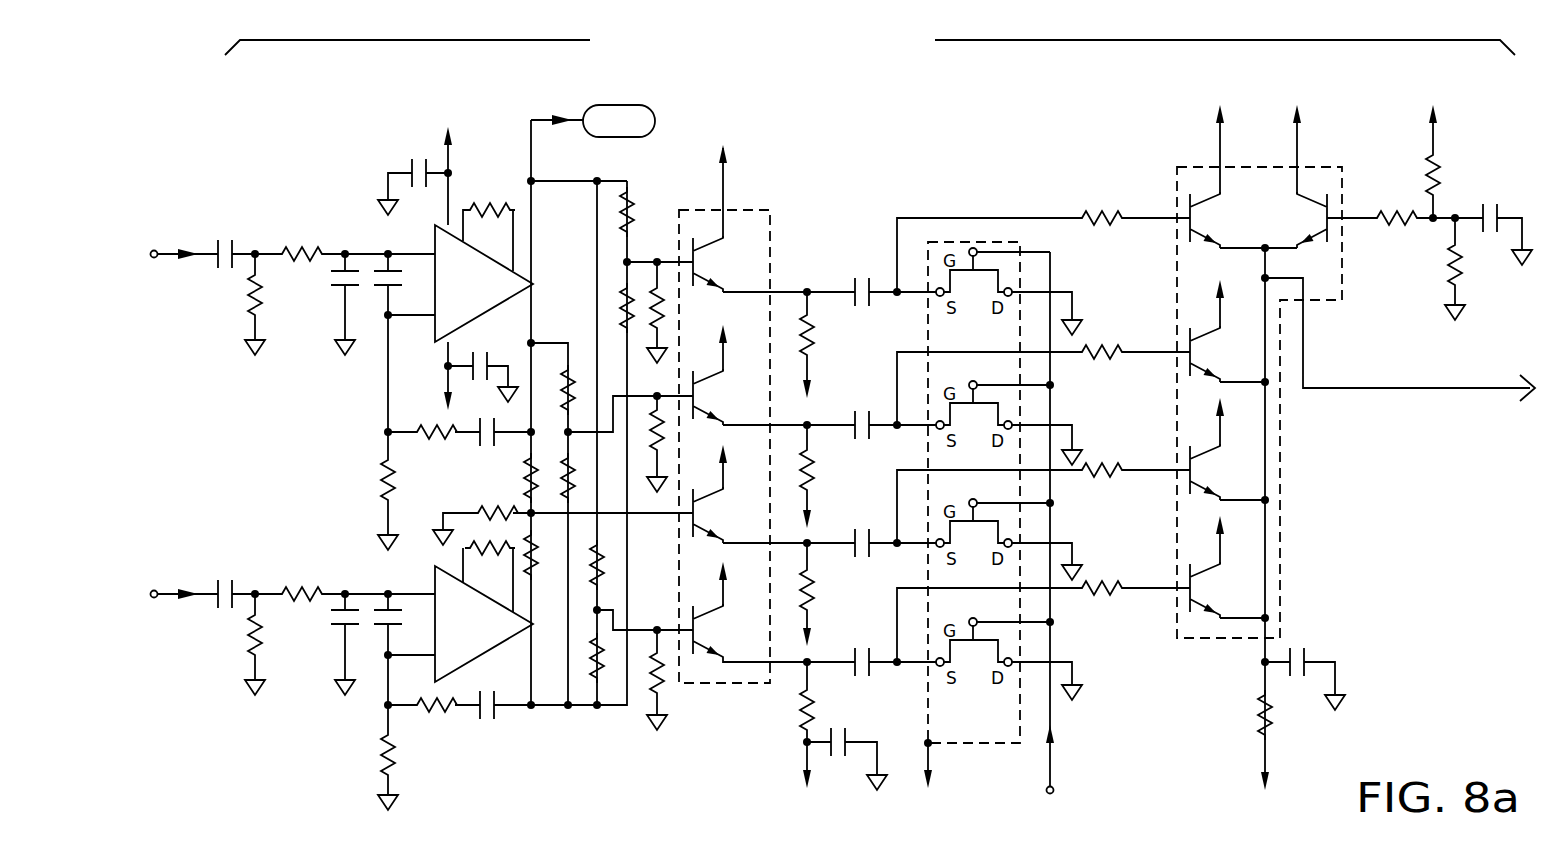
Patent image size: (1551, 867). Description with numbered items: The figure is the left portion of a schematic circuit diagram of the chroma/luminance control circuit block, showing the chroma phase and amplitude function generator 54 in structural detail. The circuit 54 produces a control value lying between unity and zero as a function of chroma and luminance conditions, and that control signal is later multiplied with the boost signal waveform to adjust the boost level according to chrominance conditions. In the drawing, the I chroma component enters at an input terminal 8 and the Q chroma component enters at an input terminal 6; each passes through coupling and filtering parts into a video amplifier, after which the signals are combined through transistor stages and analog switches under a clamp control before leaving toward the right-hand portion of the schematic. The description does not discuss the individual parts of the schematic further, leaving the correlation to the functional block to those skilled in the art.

The chroma phase and amplitude function generator 54 is at (593, 760).
The I chroma component input 8 is at (202, 247).
The Q chroma component input 6 is at (202, 586).